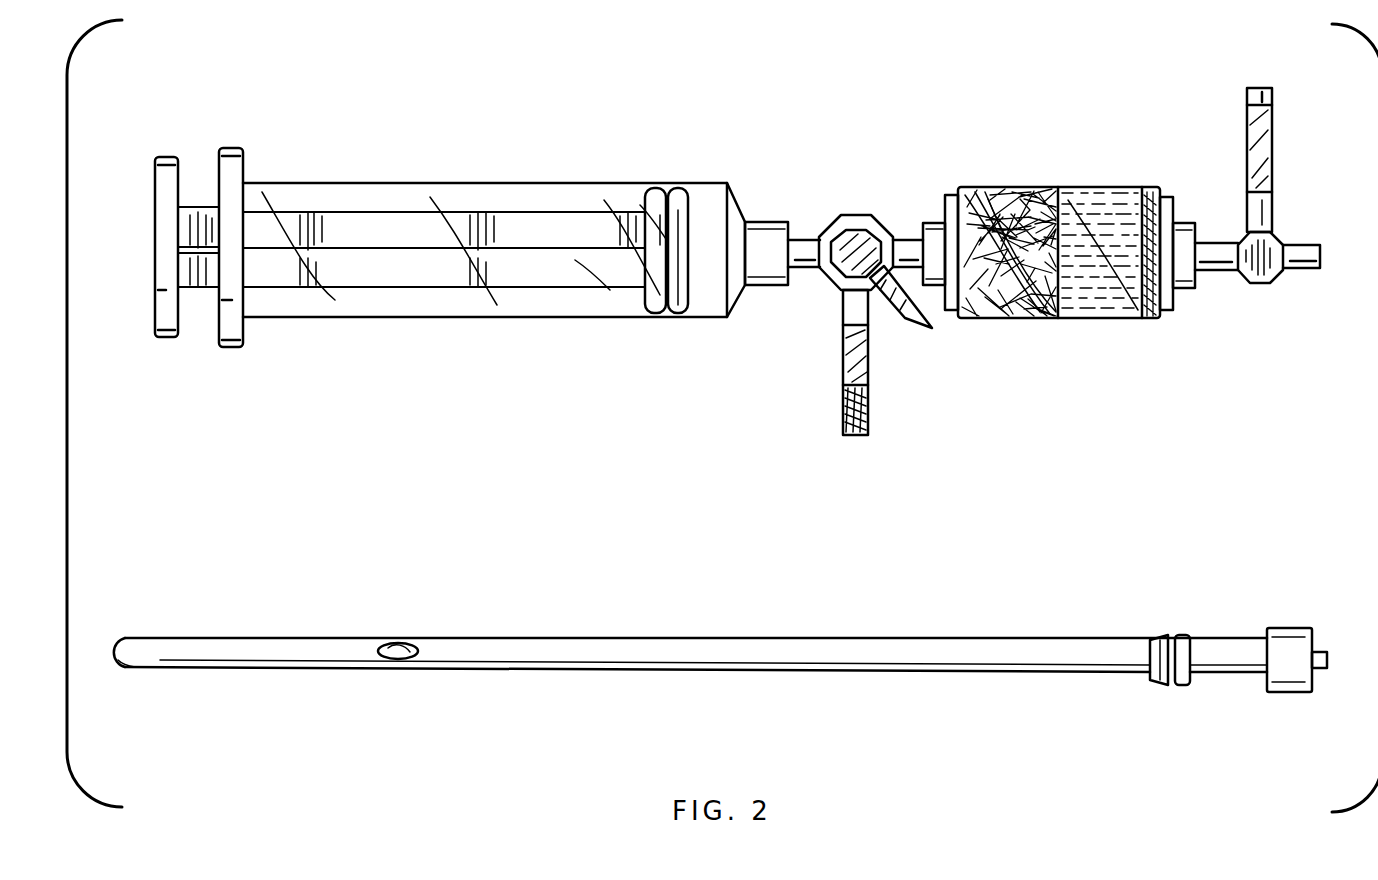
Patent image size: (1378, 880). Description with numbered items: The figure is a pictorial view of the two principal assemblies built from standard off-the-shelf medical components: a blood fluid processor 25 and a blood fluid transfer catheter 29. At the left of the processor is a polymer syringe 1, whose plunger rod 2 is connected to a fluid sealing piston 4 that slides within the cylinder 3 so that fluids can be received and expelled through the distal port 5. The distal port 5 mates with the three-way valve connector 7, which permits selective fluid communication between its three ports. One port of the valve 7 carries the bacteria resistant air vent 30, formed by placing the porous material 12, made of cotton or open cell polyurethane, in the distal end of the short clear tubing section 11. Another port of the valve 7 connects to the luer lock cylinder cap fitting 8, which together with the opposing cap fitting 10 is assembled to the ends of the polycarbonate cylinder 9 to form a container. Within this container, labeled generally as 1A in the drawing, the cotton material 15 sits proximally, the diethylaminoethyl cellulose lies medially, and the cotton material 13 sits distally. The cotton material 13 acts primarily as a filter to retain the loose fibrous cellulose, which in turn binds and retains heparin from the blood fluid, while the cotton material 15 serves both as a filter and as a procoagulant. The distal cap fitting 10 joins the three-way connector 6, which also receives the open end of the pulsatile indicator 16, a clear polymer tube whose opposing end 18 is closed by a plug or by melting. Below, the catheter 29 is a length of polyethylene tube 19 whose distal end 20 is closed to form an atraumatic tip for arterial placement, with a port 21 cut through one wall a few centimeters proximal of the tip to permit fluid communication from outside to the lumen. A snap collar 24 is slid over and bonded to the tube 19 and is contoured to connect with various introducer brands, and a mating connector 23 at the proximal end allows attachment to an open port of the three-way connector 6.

The syringe 1 is at (425, 178).
The filter housing 1A is at (1085, 300).
The plunger rod 2 is at (198, 195).
The cylinder 3 is at (487, 318).
The fluid sealing piston 4 is at (652, 188).
The distal port 5 is at (770, 286).
The three-way connector 6 is at (1276, 292).
The three-way valve connector 7 is at (864, 213).
The luer lock cylinder cap fitting 8 is at (938, 221).
The cylinder 9 is at (1070, 322).
The luer lock cylinder cap fitting 10 is at (1183, 224).
The tubing section 11 is at (843, 366).
The porous material 12 is at (870, 414).
The cotton material 13 is at (1152, 318).
The cotton material 15 is at (1020, 318).
The pulsatile indicator 16 is at (1272, 147).
The closed end 18 is at (1247, 96).
The tube 19 is at (670, 673).
The distal end 20 is at (115, 668).
The port 21 is at (400, 645).
The mating connector 23 is at (1285, 628).
The snap collar 24 is at (1165, 686).
The blood fluid processor 25 is at (853, 100).
The blood fluid transfer catheter 29 is at (792, 640).
The bacteria resistant air vent 30 is at (872, 366).